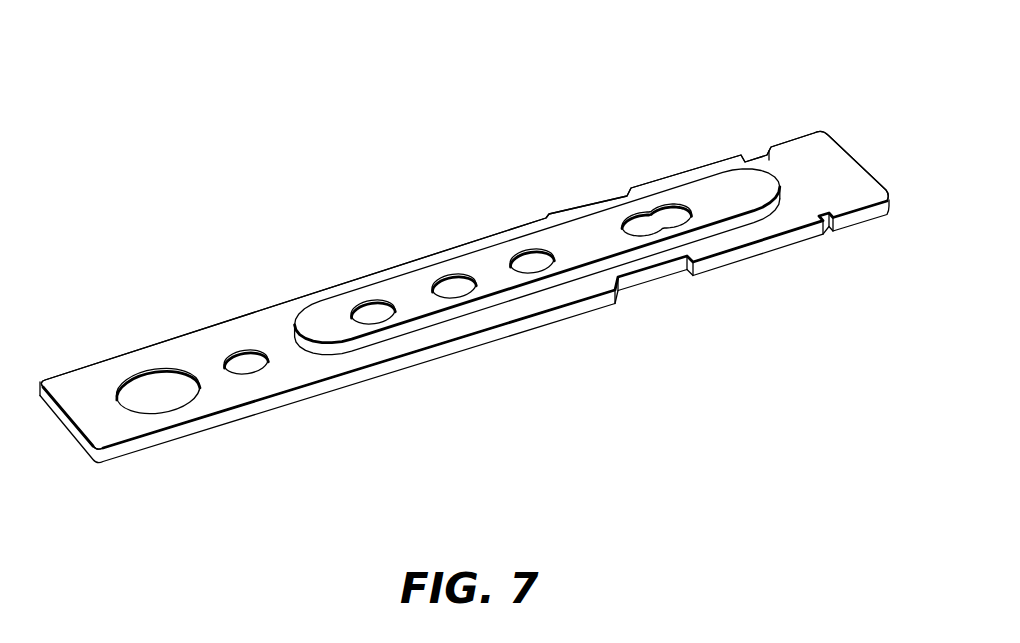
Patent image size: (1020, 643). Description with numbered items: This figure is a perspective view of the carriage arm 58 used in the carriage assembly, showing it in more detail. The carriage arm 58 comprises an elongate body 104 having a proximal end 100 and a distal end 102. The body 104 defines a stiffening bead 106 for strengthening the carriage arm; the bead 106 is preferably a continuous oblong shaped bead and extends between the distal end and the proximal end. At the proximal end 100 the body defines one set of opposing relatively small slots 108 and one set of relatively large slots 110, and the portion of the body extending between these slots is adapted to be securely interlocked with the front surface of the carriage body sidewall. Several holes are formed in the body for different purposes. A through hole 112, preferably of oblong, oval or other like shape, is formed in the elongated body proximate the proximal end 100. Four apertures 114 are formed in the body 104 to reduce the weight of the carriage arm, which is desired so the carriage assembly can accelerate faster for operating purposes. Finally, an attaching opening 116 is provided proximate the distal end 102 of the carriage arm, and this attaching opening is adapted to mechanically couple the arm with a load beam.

The carriage arm 58 is at (327, 60).
The proximal end 100 is at (838, 176).
The distal end 102 is at (72, 433).
The elongate body 104 is at (233, 396).
The stiffening bead 106 is at (448, 320).
The relatively small slots 108 is at (747, 157).
The relatively large slots 110 is at (654, 274).
The through hole 112 is at (669, 213).
The apertures 114 is at (246, 351).
The attaching opening 116 is at (150, 370).